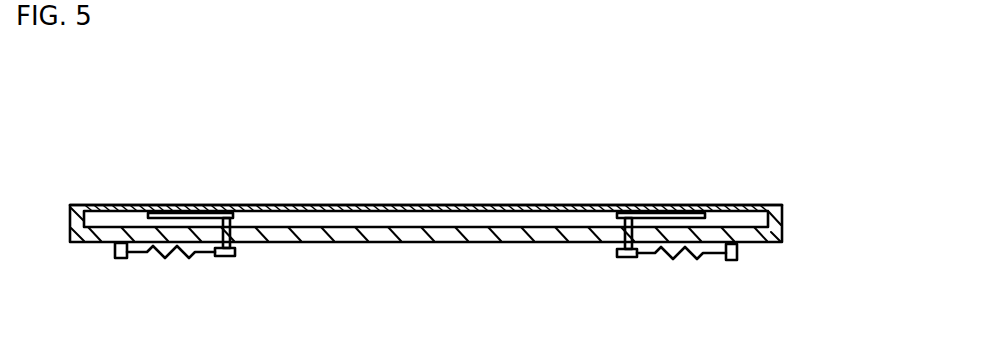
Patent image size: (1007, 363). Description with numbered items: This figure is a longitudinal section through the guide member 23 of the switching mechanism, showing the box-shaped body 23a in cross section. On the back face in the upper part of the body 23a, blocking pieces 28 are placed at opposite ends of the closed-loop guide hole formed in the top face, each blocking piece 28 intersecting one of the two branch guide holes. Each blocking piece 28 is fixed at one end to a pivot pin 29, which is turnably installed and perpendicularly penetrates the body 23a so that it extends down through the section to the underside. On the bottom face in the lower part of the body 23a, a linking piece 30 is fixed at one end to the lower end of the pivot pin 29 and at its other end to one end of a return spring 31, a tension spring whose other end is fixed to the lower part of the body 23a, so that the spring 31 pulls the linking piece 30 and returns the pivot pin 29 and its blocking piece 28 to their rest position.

The guide member 23 is at (477, 200).
The body 23a is at (370, 202).
The blocking piece 28 is at (653, 214).
The pivot pin 29 is at (623, 234).
The linking piece 30 is at (626, 258).
The return spring 31 is at (684, 256).